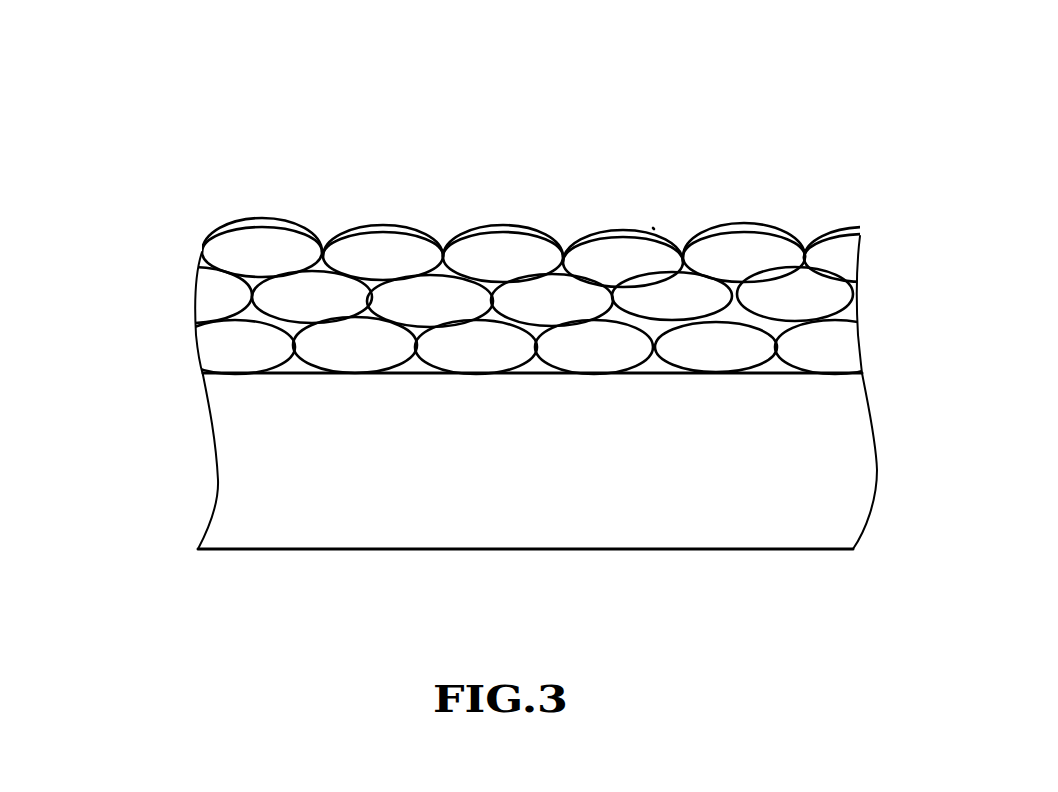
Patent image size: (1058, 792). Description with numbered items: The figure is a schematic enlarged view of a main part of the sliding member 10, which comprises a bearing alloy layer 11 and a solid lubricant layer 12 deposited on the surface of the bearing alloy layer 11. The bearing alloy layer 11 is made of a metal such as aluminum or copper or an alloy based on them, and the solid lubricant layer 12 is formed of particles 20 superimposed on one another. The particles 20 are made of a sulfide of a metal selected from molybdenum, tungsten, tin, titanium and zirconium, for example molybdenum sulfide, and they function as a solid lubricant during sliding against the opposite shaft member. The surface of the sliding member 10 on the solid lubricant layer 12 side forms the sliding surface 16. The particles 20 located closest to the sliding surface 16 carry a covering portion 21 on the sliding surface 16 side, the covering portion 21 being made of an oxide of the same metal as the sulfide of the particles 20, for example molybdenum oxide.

The sliding member 10 is at (808, 122).
The bearing alloy layer 11 is at (230, 437).
The solid lubricant layer 12 is at (186, 318).
The sliding surface 16 is at (653, 227).
The particles 20 is at (228, 252).
The covering portion 21 is at (250, 219).